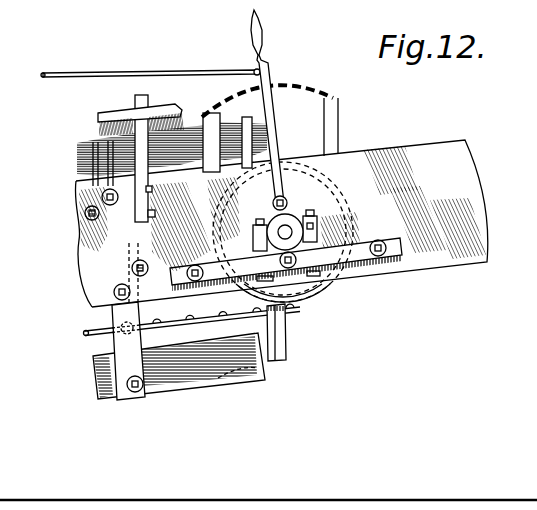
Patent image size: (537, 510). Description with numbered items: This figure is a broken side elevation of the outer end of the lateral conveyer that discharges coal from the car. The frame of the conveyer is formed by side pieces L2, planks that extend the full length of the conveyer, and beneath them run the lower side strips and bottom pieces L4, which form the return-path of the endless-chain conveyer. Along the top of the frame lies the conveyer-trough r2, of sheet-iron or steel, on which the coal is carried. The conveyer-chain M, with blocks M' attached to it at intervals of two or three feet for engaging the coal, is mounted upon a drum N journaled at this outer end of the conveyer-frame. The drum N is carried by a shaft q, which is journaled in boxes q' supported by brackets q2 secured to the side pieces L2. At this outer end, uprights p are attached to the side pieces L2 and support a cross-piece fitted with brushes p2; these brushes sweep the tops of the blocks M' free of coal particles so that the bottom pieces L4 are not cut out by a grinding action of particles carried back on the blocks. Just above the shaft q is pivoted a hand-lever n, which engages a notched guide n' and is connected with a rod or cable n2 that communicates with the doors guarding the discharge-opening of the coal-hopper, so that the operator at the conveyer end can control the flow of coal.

The side pieces L2 is at (282, 223).
The conveyer-trough r2 is at (85, 168).
The uprights p is at (147, 108).
The brushes p2 is at (110, 115).
The rod or cable n2 is at (120, 75).
The notched guide n' is at (276, 114).
The drum N is at (307, 293).
The hand-lever n is at (276, 106).
The boxes q' is at (289, 212).
The shaft q is at (270, 221).
The brackets q2 is at (363, 240).
The conveyer-chain M is at (165, 345).
The bottom pieces L4 is at (211, 388).
The blocks M' is at (297, 341).